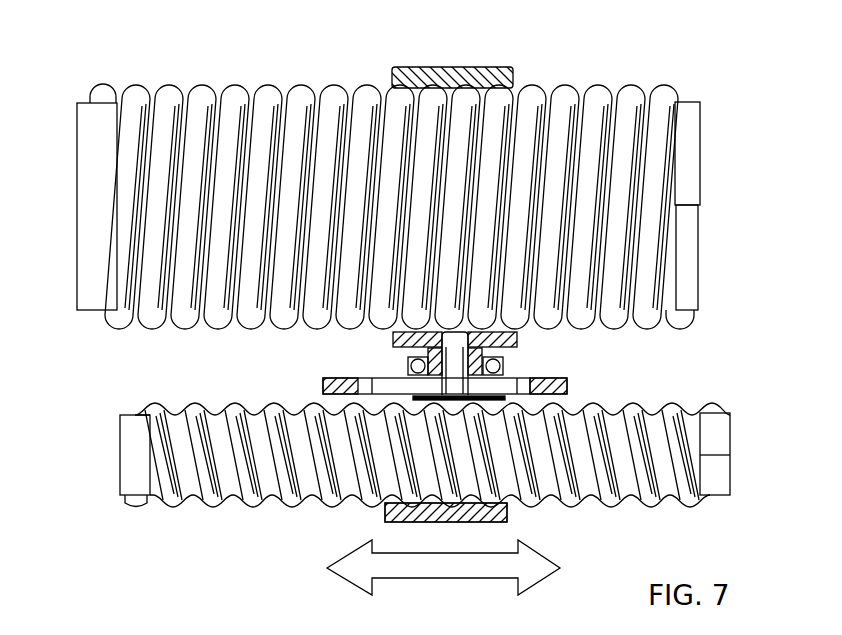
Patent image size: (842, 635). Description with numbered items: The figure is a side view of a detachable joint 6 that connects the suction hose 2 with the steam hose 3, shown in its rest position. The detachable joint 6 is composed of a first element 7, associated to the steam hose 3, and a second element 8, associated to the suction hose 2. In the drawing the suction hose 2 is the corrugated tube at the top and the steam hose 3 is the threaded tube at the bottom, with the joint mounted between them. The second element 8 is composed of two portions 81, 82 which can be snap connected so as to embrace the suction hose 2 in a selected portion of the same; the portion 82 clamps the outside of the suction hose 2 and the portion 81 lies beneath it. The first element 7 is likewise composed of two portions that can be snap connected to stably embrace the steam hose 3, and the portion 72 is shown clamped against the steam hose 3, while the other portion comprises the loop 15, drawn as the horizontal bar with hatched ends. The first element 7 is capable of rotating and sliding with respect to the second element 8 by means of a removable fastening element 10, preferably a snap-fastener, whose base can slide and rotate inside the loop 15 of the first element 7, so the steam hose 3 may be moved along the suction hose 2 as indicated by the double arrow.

The suction hose 2 is at (665, 87).
The steam hose 3 is at (700, 405).
The detachable joint 6 is at (395, 178).
The first element 7 is at (381, 518).
The second element 8 is at (445, 210).
The removable fastening element 10 is at (452, 289).
The loop 15 is at (393, 382).
The portion 72 is at (563, 385).
The portion 81 is at (393, 340).
The portion 82 is at (483, 70).